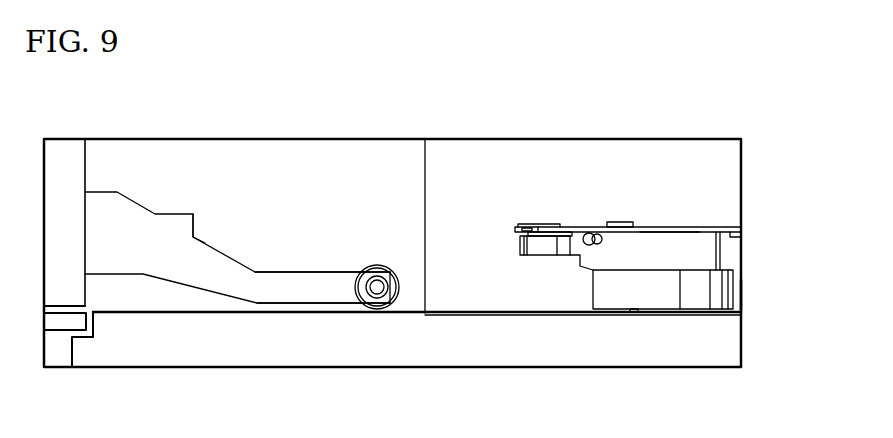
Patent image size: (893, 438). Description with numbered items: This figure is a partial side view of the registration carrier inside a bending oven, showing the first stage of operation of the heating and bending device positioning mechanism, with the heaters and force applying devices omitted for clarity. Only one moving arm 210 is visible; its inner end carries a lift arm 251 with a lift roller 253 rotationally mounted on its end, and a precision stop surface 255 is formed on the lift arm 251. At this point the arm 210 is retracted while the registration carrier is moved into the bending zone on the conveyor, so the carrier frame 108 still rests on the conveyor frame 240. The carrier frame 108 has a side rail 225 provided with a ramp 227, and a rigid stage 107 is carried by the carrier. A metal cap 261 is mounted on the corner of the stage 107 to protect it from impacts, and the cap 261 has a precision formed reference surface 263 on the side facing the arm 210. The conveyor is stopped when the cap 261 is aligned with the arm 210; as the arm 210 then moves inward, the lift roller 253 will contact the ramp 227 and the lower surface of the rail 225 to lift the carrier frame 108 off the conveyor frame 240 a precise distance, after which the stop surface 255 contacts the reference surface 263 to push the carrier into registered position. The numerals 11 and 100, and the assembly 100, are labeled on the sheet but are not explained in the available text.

The base 11 is at (590, 349).
The stage 107 is at (715, 230).
The carrier frame 108 is at (672, 218).
The device 100 is at (663, 289).
The arm 210 is at (110, 212).
The side rail 225 is at (655, 245).
The ramp 227 is at (578, 263).
The conveyor frame 240 is at (752, 296).
The lift arm 251 is at (332, 279).
The lift roller 253 is at (384, 268).
The stop surface 255 is at (200, 225).
The cap 261 is at (572, 228).
The reference surface 263 is at (515, 230).